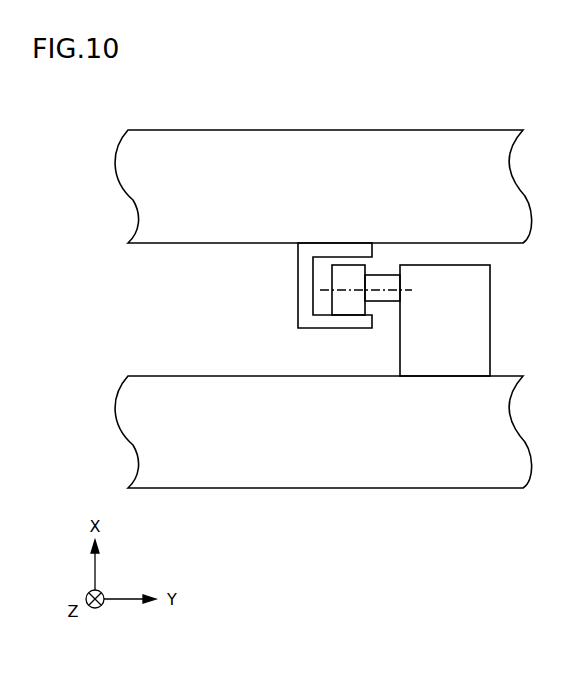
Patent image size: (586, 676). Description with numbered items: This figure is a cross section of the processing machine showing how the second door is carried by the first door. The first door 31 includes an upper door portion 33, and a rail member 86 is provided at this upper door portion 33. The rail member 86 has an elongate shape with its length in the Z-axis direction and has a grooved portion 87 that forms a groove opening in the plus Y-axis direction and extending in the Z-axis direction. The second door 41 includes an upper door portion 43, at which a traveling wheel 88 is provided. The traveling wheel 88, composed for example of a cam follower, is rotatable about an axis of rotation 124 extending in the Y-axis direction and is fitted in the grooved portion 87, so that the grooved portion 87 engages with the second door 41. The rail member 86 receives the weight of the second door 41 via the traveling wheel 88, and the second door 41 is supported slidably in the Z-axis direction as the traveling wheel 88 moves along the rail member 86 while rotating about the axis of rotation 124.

The first door 31 is at (163, 130).
The upper door portion 33 is at (480, 150).
The second door 41 is at (164, 376).
The upper door portion 43 is at (480, 468).
The rail member 86 is at (297, 286).
The grooved portion 87 is at (352, 296).
The traveling wheel 88 is at (353, 305).
The axis of rotation 124 is at (327, 287).